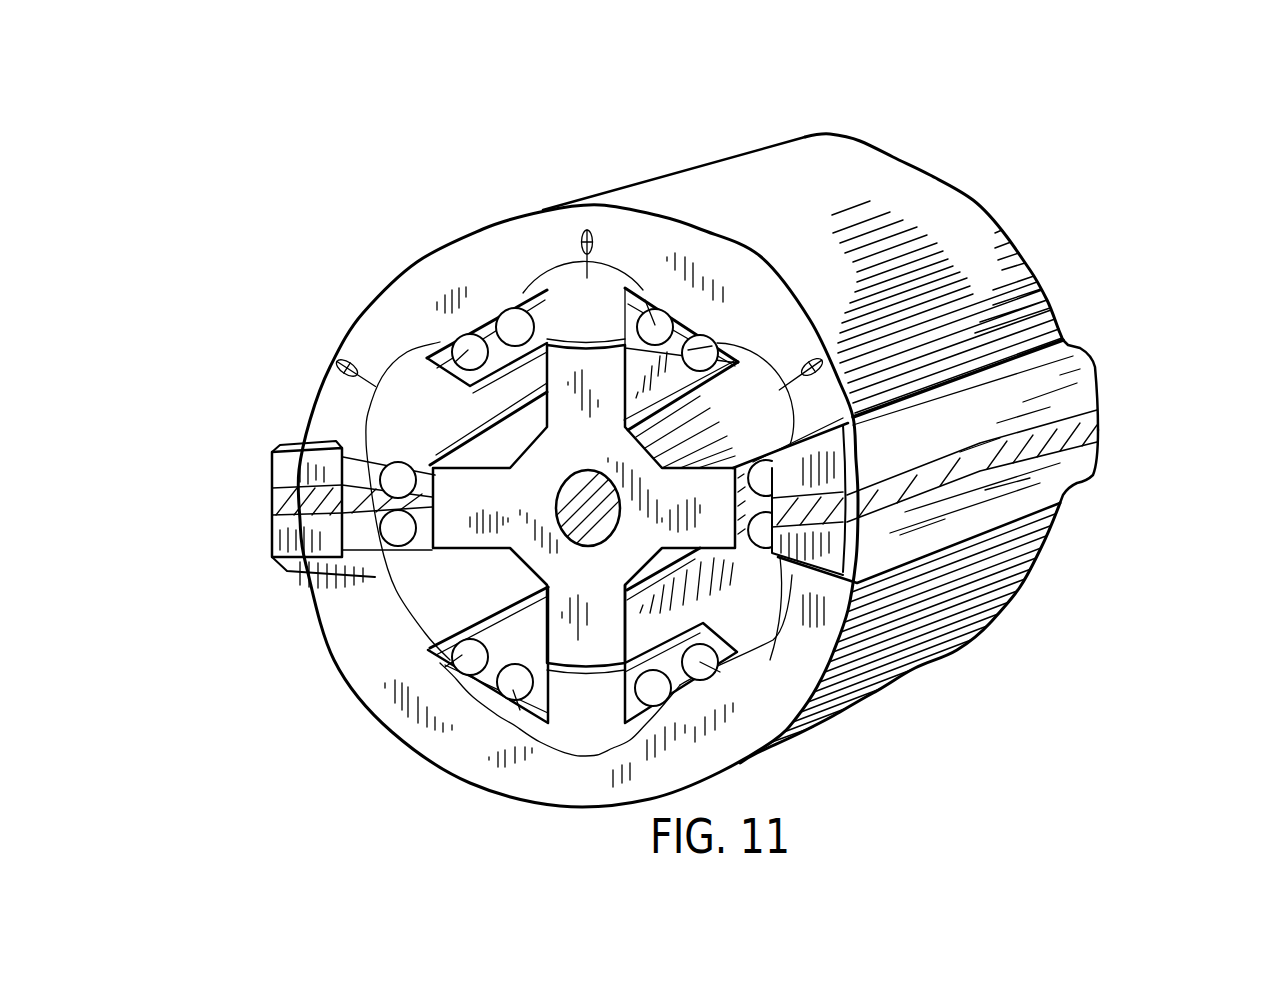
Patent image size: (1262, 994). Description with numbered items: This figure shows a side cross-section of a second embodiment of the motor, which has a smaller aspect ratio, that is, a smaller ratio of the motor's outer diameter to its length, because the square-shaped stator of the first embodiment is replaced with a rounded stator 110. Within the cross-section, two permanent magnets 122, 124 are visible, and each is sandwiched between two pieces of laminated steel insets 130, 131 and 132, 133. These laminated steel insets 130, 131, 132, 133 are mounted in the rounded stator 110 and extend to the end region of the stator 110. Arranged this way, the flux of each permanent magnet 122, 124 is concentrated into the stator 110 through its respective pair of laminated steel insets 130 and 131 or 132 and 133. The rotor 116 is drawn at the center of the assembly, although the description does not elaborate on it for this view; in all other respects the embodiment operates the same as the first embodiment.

The rounded stator 110 is at (757, 160).
The rotor 116 is at (543, 437).
The permanent magnet 122 is at (268, 492).
The permanent magnet 124 is at (953, 483).
The laminated steel inset 130 is at (287, 558).
The laminated steel inset 131 is at (298, 440).
The laminated steel inset 132 is at (1103, 453).
The laminated steel inset 133 is at (1097, 372).